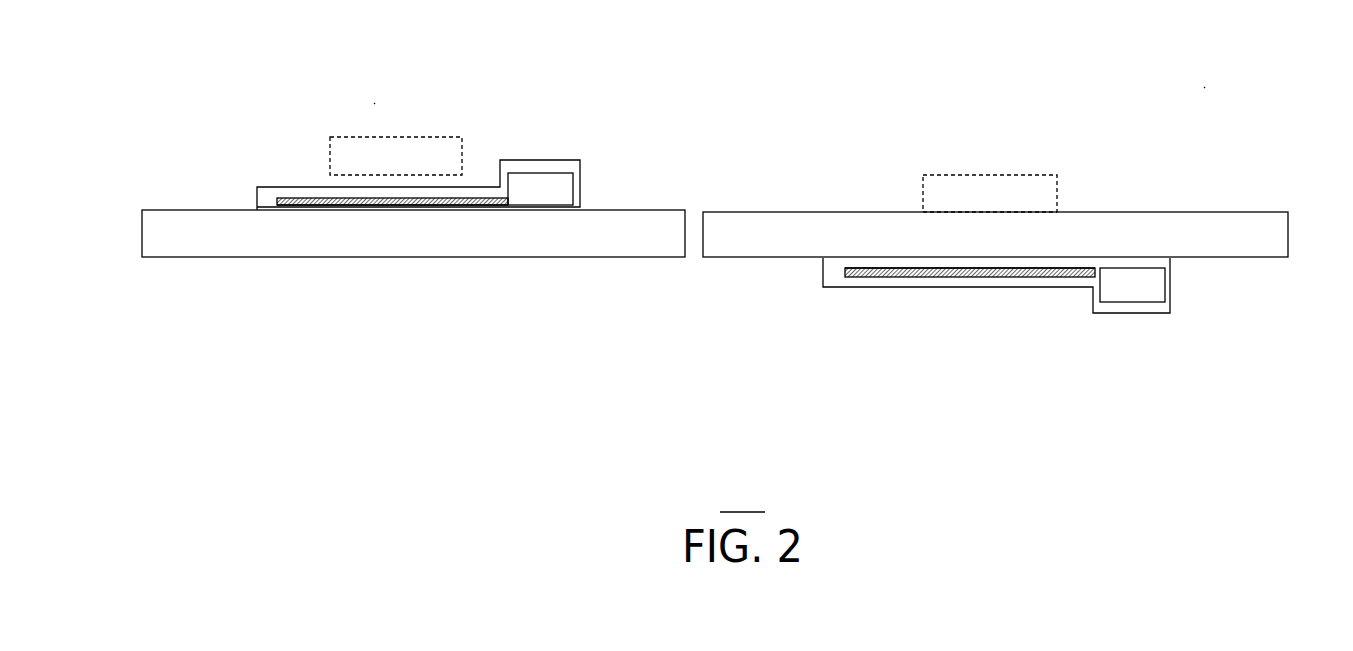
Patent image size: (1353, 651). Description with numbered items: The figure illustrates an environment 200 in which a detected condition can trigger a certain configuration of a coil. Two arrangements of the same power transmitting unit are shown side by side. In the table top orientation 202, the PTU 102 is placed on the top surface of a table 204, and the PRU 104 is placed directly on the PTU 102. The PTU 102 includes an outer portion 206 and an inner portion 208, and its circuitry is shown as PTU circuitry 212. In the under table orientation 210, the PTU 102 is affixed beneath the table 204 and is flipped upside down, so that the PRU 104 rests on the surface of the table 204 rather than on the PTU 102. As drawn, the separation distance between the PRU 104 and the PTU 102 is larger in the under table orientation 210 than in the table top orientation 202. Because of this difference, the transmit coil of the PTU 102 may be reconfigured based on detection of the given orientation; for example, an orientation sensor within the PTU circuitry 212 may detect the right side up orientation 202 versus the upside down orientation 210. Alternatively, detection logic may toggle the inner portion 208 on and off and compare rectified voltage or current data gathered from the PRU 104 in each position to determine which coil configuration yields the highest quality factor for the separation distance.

The environment 200 is at (742, 499).
The table top orientation 202 is at (372, 100).
The under table orientation 210 is at (1208, 84).
The PTU 102 is at (257, 205).
The PRU 104 is at (416, 137).
The table 204 is at (218, 258).
The outer portion 206 is at (330, 207).
The inner portion 208 is at (380, 198).
The PTU circuitry 212 is at (578, 175).